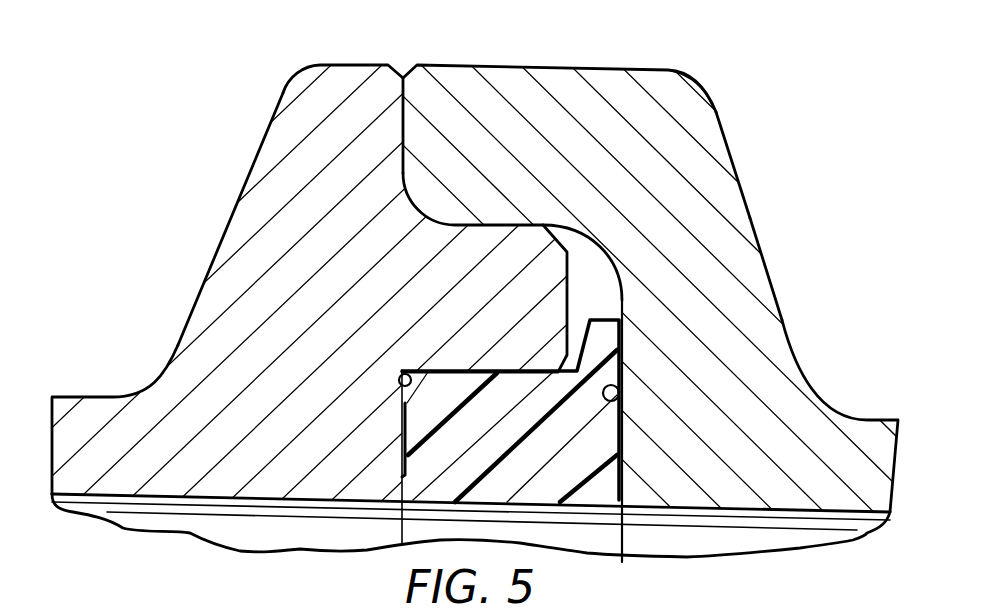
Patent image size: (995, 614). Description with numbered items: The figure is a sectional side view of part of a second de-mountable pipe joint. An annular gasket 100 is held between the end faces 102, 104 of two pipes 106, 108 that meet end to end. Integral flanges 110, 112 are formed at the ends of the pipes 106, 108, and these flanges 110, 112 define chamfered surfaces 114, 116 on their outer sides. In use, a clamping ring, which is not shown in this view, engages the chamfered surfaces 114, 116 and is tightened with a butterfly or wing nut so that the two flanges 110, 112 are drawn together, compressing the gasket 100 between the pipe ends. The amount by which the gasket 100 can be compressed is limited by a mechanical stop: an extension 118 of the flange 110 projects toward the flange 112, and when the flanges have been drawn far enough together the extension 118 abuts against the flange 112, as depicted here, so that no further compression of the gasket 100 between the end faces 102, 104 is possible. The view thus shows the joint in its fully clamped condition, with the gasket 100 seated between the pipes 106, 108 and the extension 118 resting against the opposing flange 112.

The annular gasket 100 is at (592, 492).
The end face 102 is at (617, 397).
The end face 104 is at (402, 382).
The pipe 106 is at (847, 447).
The pipe 108 is at (92, 407).
The flange 110 is at (745, 220).
The flange 112 is at (303, 103).
The chamfered surface 114 is at (732, 135).
The chamfered surface 116 is at (258, 162).
The extension 118 is at (513, 93).